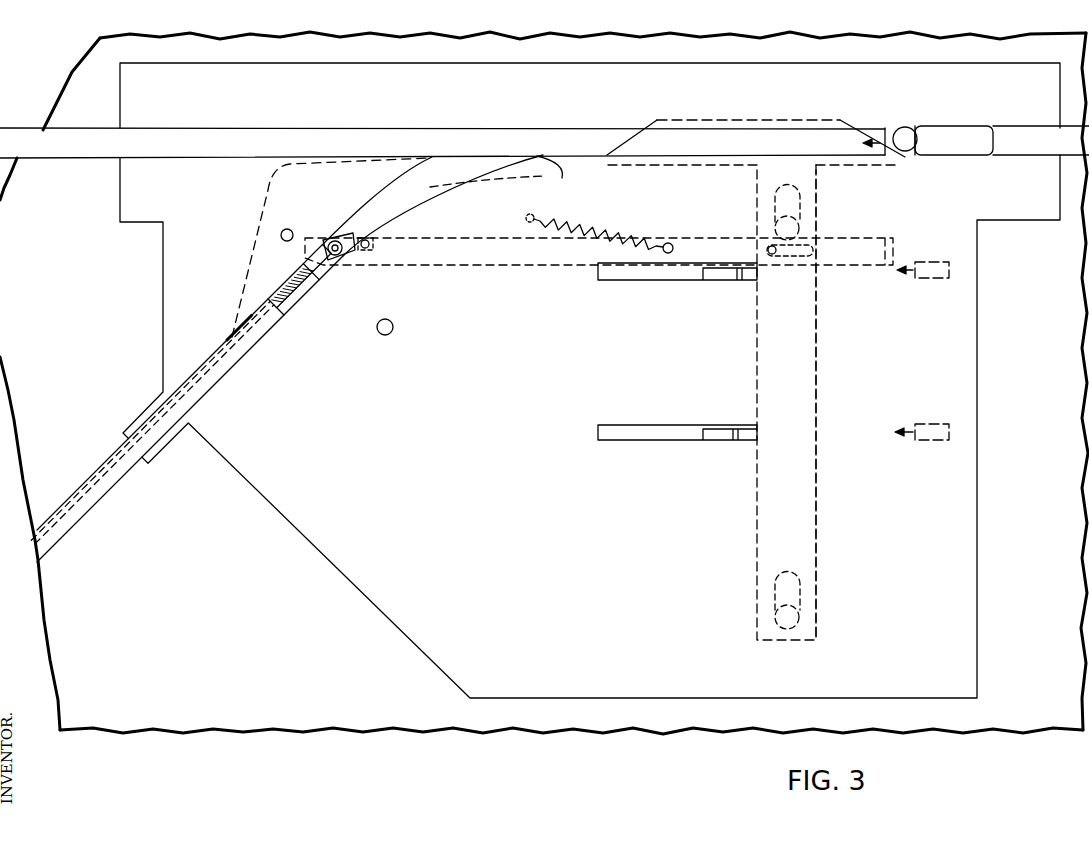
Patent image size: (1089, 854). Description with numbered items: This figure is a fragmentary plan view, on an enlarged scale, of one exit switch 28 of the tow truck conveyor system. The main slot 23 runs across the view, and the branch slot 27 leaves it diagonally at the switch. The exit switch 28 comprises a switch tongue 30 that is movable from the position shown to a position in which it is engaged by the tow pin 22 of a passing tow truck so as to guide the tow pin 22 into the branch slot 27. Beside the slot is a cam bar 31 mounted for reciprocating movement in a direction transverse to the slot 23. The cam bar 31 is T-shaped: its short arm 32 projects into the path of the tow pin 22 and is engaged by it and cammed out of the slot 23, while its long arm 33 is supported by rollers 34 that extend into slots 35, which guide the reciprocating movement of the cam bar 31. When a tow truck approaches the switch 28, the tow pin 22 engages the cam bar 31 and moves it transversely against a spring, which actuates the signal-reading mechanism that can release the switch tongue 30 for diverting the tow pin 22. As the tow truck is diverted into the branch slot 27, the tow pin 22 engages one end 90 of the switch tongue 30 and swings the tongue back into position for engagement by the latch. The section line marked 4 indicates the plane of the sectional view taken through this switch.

The section line 4- 4 is at (613, 713).
The tow pin 22 is at (902, 133).
The slot 23 is at (400, 115).
The branch slot 27 is at (253, 350).
The exit switch 28 is at (977, 418).
The switch tongue 30 is at (423, 180).
The cam bar 31 is at (816, 508).
The short arm 32 is at (822, 150).
The long arm 33 is at (812, 357).
The rollers 34 is at (838, 618).
The slots 35 is at (835, 588).
The end of the switch tongue 90 is at (243, 306).